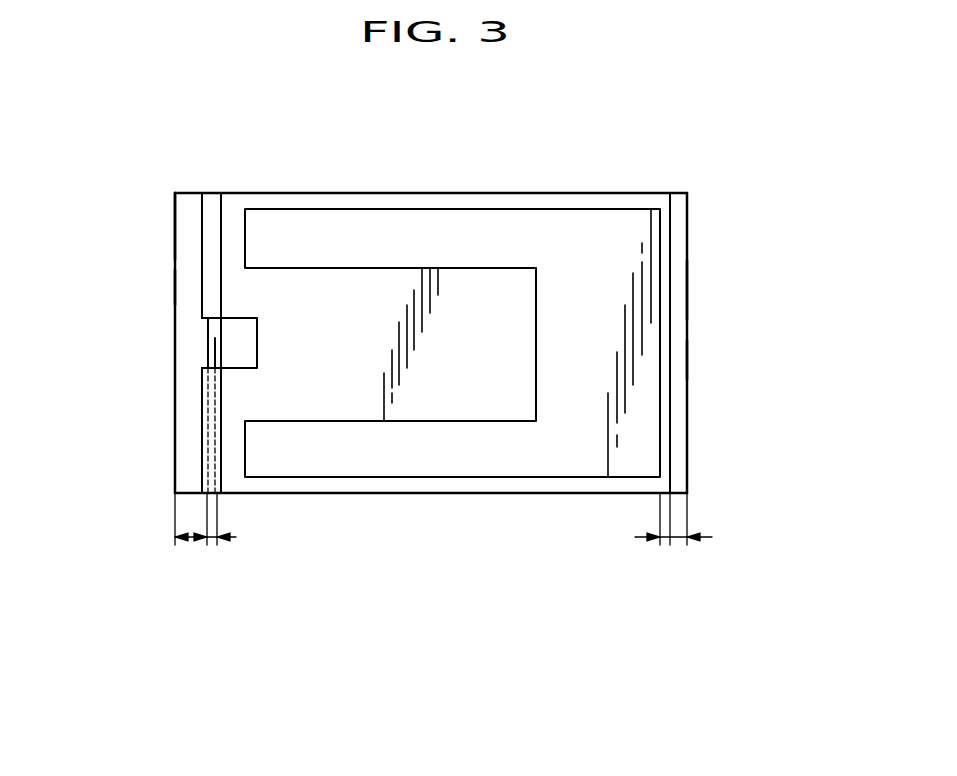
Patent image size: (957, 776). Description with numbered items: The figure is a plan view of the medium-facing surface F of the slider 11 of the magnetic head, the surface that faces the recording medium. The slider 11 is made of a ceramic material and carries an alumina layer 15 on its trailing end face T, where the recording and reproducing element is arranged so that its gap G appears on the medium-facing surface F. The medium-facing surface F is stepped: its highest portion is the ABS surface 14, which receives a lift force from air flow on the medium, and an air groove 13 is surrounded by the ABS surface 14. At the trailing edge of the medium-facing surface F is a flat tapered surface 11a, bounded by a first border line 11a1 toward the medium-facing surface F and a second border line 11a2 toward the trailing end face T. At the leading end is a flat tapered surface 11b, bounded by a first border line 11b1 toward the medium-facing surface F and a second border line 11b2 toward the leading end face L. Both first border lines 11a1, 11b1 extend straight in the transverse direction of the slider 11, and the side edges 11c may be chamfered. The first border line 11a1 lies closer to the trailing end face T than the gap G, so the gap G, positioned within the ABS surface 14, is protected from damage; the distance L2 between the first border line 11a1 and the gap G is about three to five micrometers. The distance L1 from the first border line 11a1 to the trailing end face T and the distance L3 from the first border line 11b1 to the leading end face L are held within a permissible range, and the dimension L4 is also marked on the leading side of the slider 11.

The slider 11 is at (438, 357).
The tapered surface 11a is at (188, 453).
The first border line 11a1 is at (208, 340).
The second border line 11a2 is at (175, 222).
The tapered surface 11b is at (677, 427).
The first border line 11b1 is at (677, 217).
The second border line 11b2 is at (687, 285).
The side edges 11c is at (617, 190).
The air groove 13 is at (470, 300).
The ABS surface 14 is at (242, 330).
The alumina layer 15 is at (221, 191).
The medium-facing surface F is at (379, 296).
The gap G is at (215, 350).
The trailing end face T is at (165, 287).
The leading end face L is at (700, 358).
The distance L1 is at (193, 540).
The distance L2 is at (212, 542).
The distance L3 is at (680, 547).
The length L4 is at (665, 545).